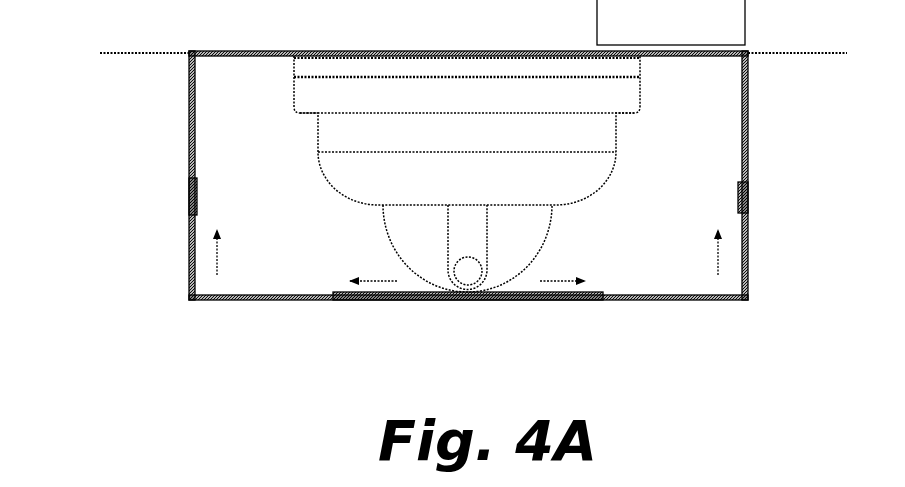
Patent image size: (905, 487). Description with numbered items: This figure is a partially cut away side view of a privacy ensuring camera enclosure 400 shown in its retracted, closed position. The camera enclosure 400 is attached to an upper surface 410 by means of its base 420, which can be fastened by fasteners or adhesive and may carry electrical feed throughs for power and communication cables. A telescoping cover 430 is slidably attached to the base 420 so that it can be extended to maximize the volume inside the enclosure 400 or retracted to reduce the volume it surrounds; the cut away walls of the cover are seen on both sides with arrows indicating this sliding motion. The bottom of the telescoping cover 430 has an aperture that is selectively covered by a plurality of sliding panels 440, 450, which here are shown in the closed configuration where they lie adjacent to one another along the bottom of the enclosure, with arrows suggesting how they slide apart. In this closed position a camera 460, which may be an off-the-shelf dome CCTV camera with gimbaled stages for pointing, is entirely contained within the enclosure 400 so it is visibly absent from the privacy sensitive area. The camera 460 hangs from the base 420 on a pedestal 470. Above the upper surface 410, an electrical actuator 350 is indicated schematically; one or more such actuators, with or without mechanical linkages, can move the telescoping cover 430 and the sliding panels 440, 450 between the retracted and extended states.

The privacy ensuring camera enclosure 400 is at (438, 214).
The upper surface 410 is at (480, 13).
The electrical actuator 350 is at (656, 44).
The base 420 is at (514, 214).
The telescoping cover 430 is at (742, 268).
The sliding panel 440 is at (527, 300).
The sliding panel 450 is at (398, 295).
The camera 460 is at (435, 240).
The pedestal 470 is at (330, 140).